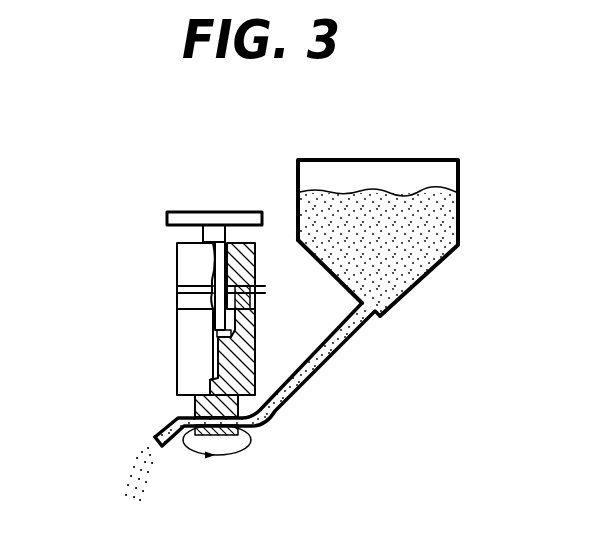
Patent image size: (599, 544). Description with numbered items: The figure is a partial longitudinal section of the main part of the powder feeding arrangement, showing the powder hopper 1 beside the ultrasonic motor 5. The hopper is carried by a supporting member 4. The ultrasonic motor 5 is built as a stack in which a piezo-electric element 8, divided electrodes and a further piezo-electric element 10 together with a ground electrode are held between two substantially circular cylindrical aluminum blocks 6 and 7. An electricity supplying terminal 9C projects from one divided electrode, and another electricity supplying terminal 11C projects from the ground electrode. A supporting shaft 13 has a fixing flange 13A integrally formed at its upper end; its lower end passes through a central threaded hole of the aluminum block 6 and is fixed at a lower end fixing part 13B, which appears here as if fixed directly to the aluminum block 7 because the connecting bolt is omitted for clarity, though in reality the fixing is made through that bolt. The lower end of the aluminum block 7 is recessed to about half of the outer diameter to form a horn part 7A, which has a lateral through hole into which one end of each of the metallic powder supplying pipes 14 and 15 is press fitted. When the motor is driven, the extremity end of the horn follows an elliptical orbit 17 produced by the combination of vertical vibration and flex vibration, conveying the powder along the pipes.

The powder hopper 1 is at (460, 205).
The supporting member 4 is at (180, 212).
The ultrasonic motor 5 is at (150, 376).
The aluminum block 6 is at (177, 260).
The aluminum block 7 is at (177, 343).
The horn part 7A is at (190, 407).
The piezo-electric element 8 is at (177, 307).
The electricity supplying terminal 9C is at (268, 298).
The piezo-electric element 10 is at (177, 294).
The electricity supplying terminal 11C is at (264, 286).
The supporting shaft 13 is at (215, 244).
The fixing flange 13A is at (203, 232).
The lower end fixing part 13B is at (230, 333).
The metallic powder supplying pipe 14 is at (270, 423).
The metallic powder supplying pipe 15 is at (157, 438).
The elliptical orbit 17 is at (231, 455).